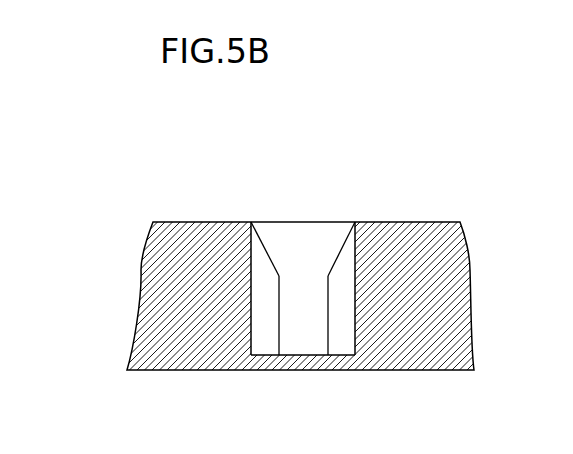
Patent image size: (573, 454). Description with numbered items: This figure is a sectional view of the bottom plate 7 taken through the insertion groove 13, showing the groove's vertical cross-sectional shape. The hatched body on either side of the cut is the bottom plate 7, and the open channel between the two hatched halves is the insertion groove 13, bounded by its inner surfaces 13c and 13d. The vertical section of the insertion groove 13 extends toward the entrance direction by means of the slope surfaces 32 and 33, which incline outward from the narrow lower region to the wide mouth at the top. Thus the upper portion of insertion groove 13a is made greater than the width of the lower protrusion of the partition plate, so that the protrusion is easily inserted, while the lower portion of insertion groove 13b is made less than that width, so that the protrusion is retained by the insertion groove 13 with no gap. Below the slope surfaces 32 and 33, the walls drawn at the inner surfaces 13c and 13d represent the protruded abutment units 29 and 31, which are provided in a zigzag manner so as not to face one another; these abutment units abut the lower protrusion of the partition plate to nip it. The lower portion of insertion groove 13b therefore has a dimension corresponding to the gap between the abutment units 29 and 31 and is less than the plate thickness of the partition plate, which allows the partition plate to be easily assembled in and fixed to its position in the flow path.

The bottom plate 7 is at (420, 221).
The insertion groove 13 is at (303, 243).
The upper portion of insertion groove 13a is at (316, 221).
The lower portion of insertion groove 13b is at (298, 352).
The inner surface of insertion groove 13c is at (247, 342).
The inner surface of insertion groove 13d is at (358, 325).
The abutment unit 29 is at (277, 300).
The abutment unit 31 is at (328, 311).
The slope surface 32 is at (263, 248).
The slope surface 33 is at (343, 248).